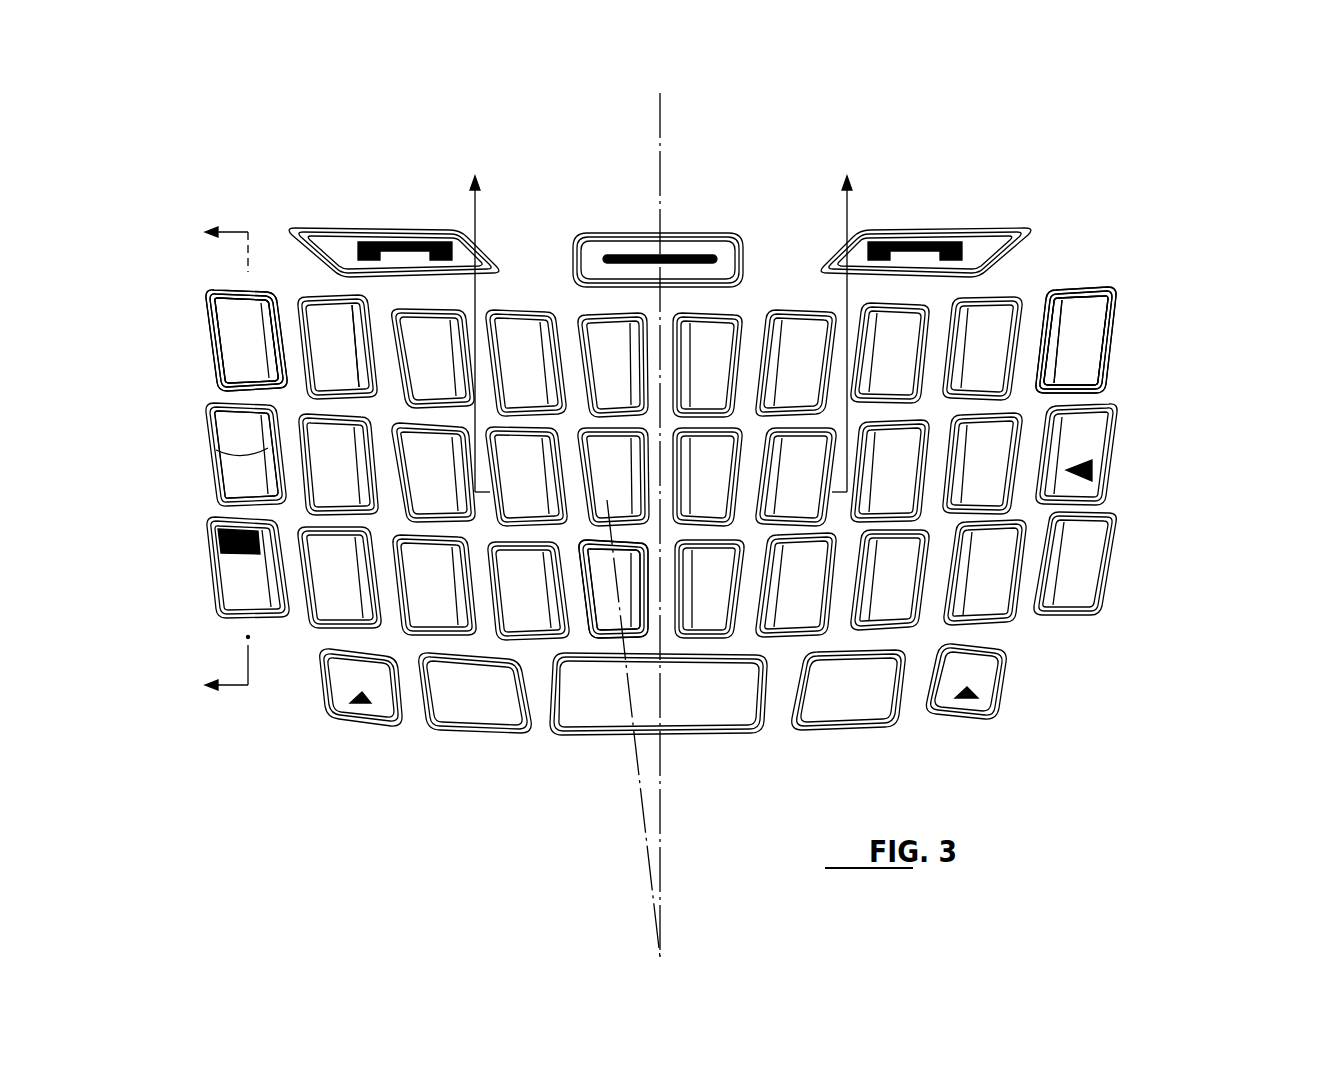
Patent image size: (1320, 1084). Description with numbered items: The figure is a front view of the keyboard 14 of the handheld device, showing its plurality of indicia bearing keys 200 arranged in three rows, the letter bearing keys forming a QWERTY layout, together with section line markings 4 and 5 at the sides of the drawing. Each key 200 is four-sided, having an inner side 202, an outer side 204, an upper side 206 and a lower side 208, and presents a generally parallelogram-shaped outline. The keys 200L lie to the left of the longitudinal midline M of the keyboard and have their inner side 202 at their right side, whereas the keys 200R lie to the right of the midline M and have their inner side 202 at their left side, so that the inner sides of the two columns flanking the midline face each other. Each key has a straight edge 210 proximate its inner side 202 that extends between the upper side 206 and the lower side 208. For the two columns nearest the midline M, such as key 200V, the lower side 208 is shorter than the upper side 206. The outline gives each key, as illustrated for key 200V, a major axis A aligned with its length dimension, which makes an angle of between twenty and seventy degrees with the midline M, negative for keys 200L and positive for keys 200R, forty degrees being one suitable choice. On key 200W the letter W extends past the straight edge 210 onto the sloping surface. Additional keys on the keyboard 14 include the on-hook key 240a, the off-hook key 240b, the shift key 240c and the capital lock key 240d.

The keyboard 14 is at (708, 525).
The indicia bearing keys 200 is at (808, 306).
The W key 200W is at (368, 312).
The keys to the right of the midline 200R is at (1117, 332).
The keys to the left of the midline 200L is at (212, 463).
The V key 200V is at (632, 628).
The inner side 202 is at (290, 336).
The outer side 204 is at (215, 350).
The upper side 206 is at (237, 289).
The lower side 208 is at (243, 393).
The straight edge 210 is at (353, 397).
The on-hook key 240a is at (336, 228).
The off-hook key 240b is at (918, 227).
The shift key 240c is at (381, 730).
The capital lock key 240d is at (960, 722).
The longitudinal midline M is at (660, 160).
The major axis A is at (643, 818).
The section line 4- 4 is at (661, 319).
The section line 5- 5 is at (216, 459).